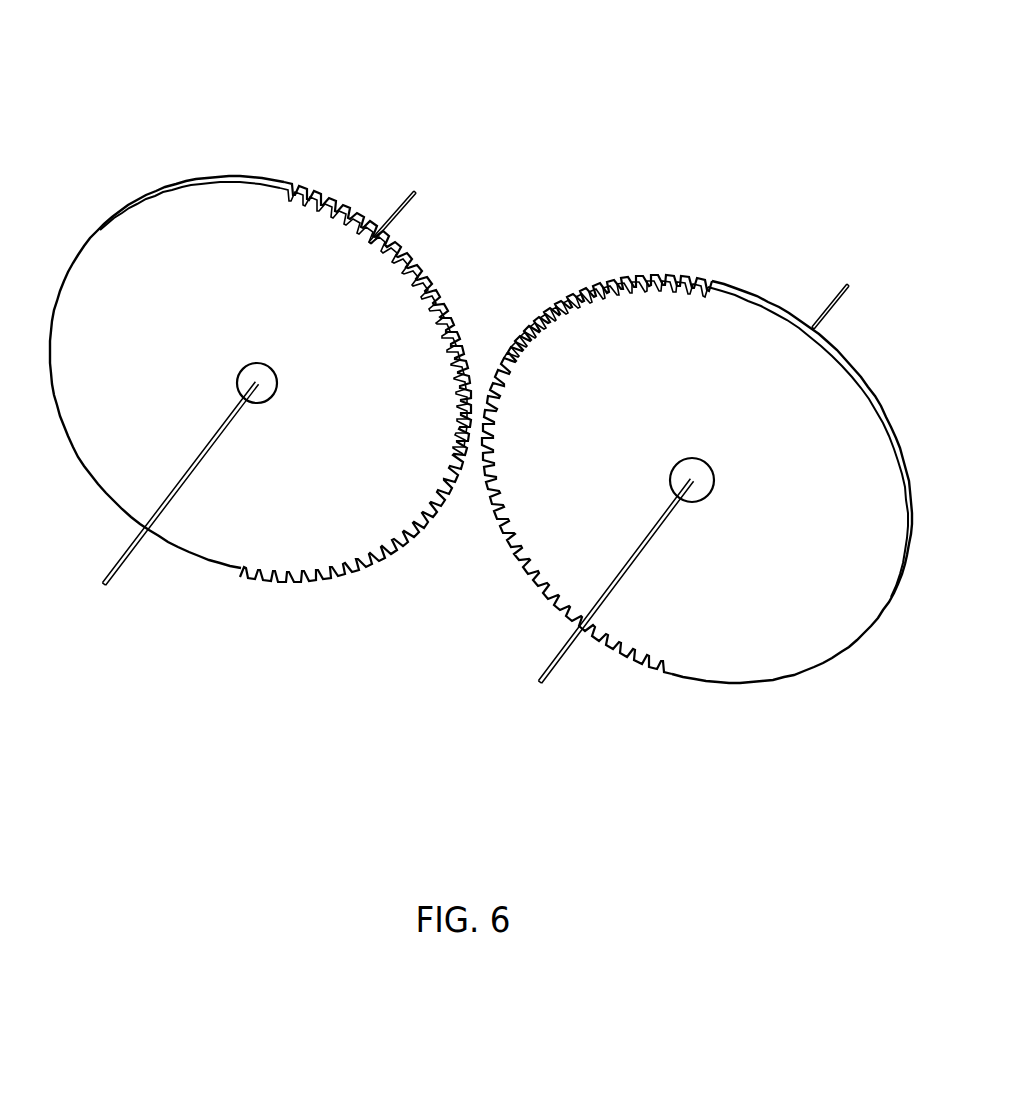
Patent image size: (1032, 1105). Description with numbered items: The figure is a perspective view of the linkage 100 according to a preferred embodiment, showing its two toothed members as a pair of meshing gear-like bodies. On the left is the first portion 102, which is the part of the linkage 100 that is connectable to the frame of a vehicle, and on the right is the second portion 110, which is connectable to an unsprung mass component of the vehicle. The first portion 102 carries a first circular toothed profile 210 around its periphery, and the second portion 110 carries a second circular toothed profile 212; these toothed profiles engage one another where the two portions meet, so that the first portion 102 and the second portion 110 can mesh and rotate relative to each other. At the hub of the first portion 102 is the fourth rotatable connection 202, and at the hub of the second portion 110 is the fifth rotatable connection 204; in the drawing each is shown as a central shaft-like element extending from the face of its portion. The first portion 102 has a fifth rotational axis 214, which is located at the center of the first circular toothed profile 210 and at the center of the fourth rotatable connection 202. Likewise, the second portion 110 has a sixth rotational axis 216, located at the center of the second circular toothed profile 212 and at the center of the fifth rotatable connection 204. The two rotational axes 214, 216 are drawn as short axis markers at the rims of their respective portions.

The linkage 100 is at (549, 104).
The first portion 102 is at (218, 535).
The second portion 110 is at (755, 642).
The fourth rotatable connection 202 is at (257, 383).
The fifth rotatable connection 204 is at (700, 497).
The first circular toothed profile 210 is at (455, 317).
The second circular toothed profile 212 is at (622, 280).
The fifth rotational axis 214 is at (400, 205).
The sixth rotational axis 216 is at (826, 305).